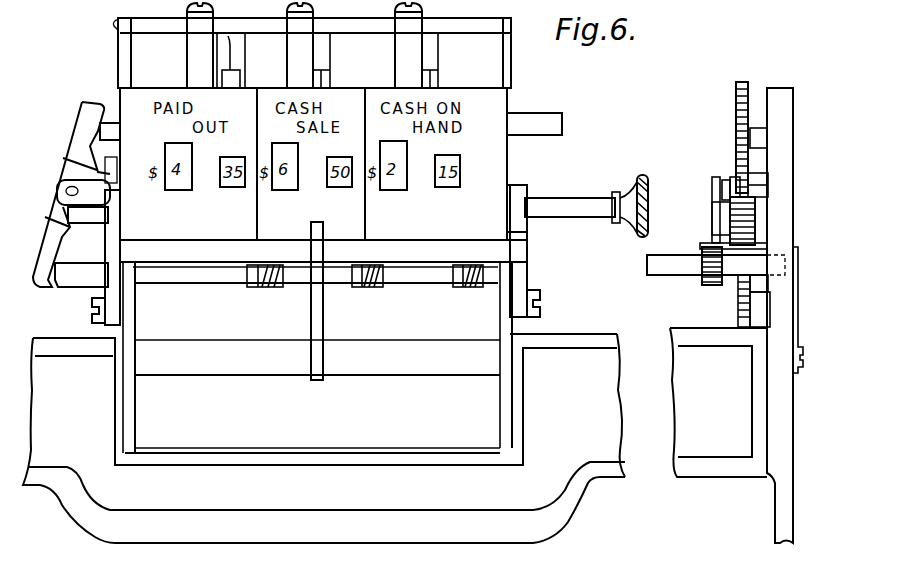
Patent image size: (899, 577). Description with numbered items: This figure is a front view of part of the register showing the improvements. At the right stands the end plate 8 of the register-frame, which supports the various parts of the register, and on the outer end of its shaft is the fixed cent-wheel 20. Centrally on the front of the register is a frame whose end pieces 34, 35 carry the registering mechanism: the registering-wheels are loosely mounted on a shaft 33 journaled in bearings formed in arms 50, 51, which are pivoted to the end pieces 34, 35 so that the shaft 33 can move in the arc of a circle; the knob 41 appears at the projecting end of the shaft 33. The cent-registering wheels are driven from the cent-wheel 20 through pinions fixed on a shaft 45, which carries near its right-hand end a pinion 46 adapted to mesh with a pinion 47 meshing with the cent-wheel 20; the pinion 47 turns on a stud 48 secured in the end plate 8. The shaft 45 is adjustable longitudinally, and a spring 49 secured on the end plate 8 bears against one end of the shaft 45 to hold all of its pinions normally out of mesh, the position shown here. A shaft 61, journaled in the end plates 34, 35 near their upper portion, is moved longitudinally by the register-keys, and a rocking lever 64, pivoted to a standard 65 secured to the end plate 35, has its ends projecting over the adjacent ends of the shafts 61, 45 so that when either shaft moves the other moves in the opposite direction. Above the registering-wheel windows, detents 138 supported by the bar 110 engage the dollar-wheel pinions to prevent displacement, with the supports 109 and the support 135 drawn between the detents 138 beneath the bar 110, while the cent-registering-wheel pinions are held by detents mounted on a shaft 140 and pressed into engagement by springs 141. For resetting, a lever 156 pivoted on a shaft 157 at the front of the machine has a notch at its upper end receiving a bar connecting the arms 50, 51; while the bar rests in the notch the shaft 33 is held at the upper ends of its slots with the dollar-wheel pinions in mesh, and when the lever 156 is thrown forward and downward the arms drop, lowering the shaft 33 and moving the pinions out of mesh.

The end plate 8 is at (787, 208).
The cent-wheel 20 is at (736, 113).
The shaft 33 is at (93, 215).
The end piece 34 is at (511, 63).
The end piece 35 is at (118, 61).
The knob 41 is at (628, 212).
The shaft 45 is at (80, 276).
The pinion 46 is at (712, 286).
The pinion 47 is at (735, 228).
The stud 48 is at (718, 205).
The spring 49 is at (797, 306).
The arm 50 is at (520, 283).
The arm 51 is at (120, 294).
The shaft 61 is at (104, 130).
The rocking lever 64 is at (72, 140).
The standard 65 is at (87, 181).
The support 109 is at (236, 58).
The bar 110 is at (315, 26).
The support 135 is at (440, 48).
The detent 138 is at (305, 45).
The shaft 140 is at (430, 272).
The spring 141 is at (365, 287).
The lever 156 is at (321, 298).
The shaft 157 is at (355, 367).